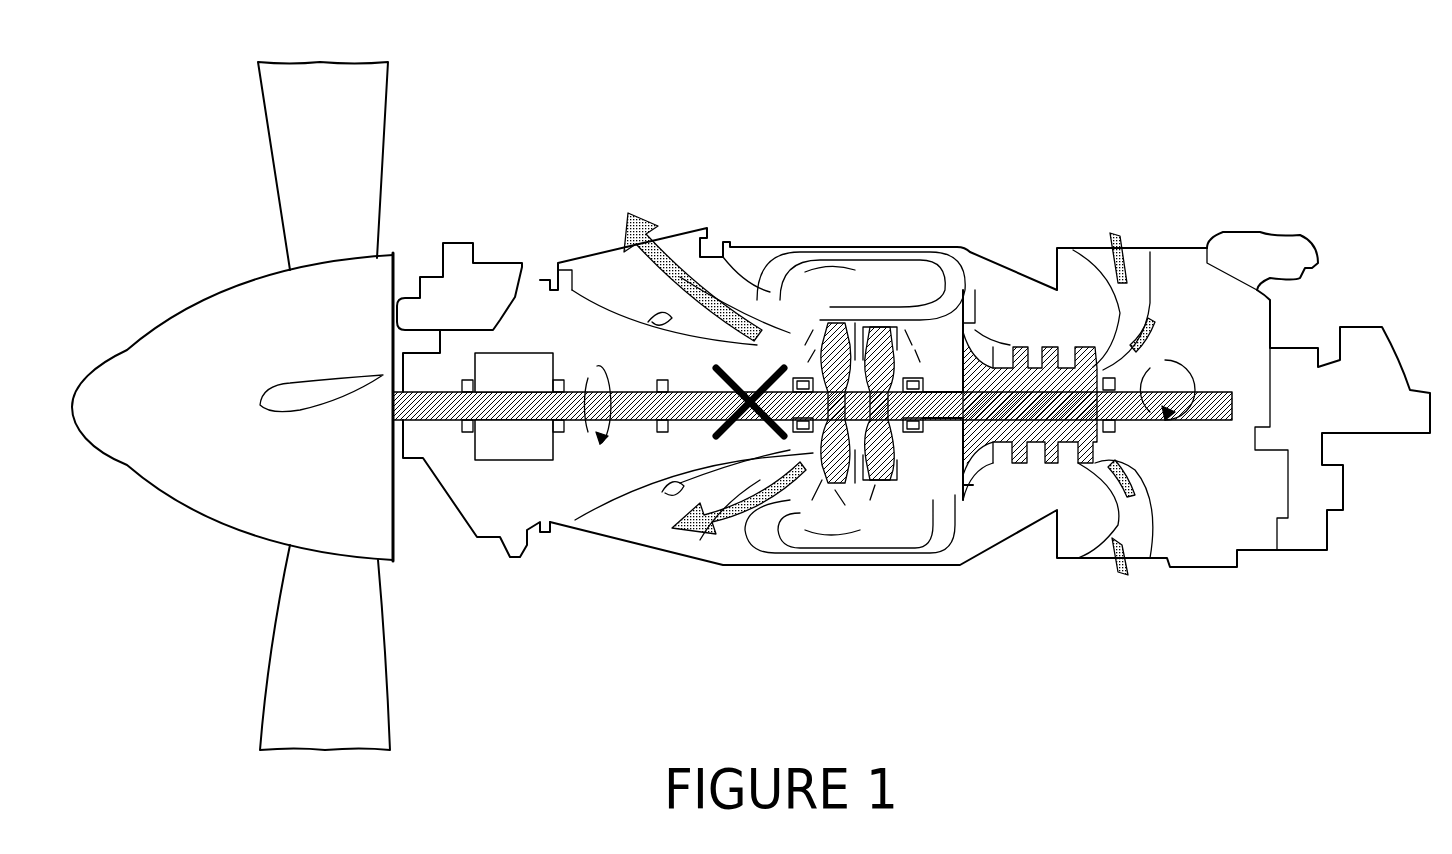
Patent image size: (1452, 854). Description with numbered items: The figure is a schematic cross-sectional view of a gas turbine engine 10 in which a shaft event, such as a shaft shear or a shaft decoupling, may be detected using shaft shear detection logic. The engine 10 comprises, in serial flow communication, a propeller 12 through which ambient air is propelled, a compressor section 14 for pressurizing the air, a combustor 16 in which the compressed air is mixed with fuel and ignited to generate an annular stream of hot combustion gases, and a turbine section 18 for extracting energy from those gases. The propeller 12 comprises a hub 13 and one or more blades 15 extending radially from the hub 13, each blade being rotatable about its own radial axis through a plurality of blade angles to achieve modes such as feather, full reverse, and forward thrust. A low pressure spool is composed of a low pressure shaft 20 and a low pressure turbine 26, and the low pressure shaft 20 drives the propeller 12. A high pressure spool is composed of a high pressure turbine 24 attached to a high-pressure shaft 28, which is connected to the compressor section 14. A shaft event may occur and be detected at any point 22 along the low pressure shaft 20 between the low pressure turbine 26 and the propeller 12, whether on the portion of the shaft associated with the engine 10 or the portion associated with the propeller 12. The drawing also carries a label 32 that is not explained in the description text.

The gas turbine engine 10 is at (983, 96).
The propeller 12 is at (254, 250).
The hub 13 is at (172, 500).
The compressor section 14 is at (1025, 462).
The blades 15 is at (268, 651).
The combustor 16 is at (892, 272).
The turbine section 18 is at (813, 455).
The low pressure shaft 20 is at (505, 398).
The point 22 is at (602, 368).
The high pressure turbine 24 is at (888, 483).
The low pressure turbine 26 is at (823, 493).
The high-pressure shaft 28 is at (955, 335).
The reduction gearbox 32 is at (472, 443).